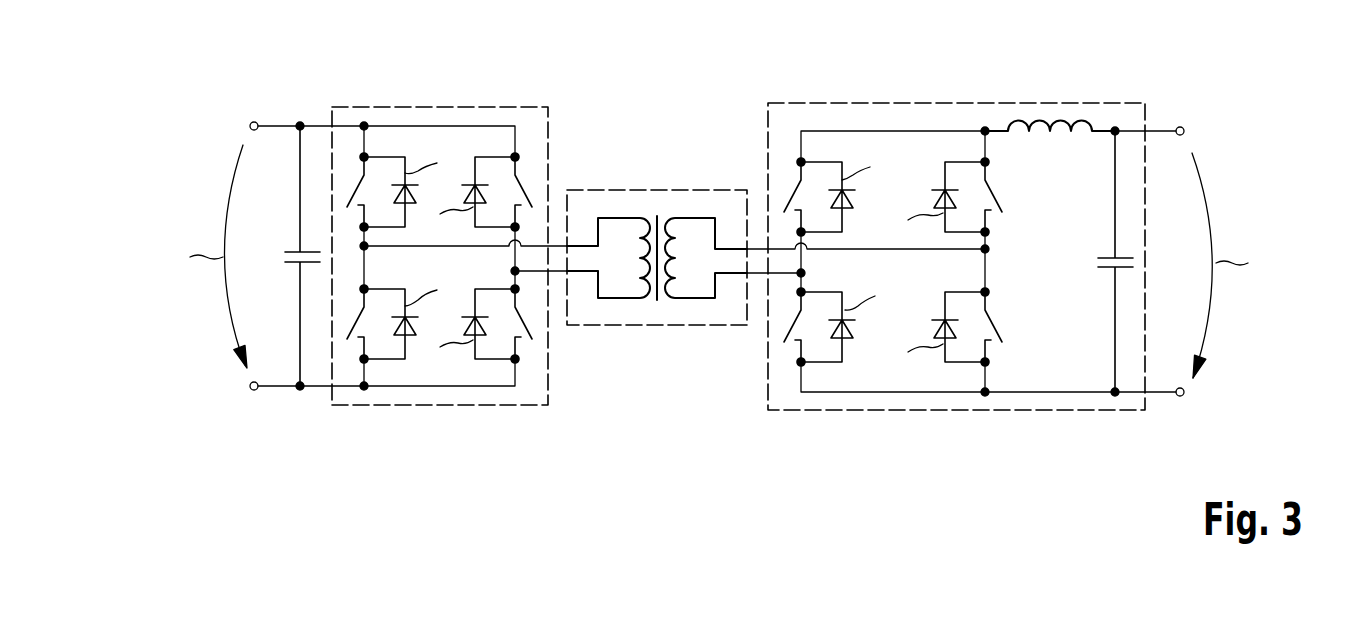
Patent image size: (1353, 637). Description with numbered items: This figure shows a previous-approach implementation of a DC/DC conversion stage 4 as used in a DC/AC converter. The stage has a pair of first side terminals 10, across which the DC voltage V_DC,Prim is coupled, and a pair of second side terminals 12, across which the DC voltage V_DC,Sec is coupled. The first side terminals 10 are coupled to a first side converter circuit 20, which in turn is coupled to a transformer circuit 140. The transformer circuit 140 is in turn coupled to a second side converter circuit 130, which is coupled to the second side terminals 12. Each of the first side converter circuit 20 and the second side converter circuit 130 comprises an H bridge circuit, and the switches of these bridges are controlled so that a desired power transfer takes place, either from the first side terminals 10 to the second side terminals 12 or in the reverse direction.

The DC/DC conversion stage 4 is at (658, 98).
The first side terminals 10 is at (254, 120).
The second side terminals 12 is at (1179, 126).
The first side converter circuit 20 is at (418, 107).
The second side converter circuit 130 is at (952, 103).
The transformer circuit 140 is at (654, 190).